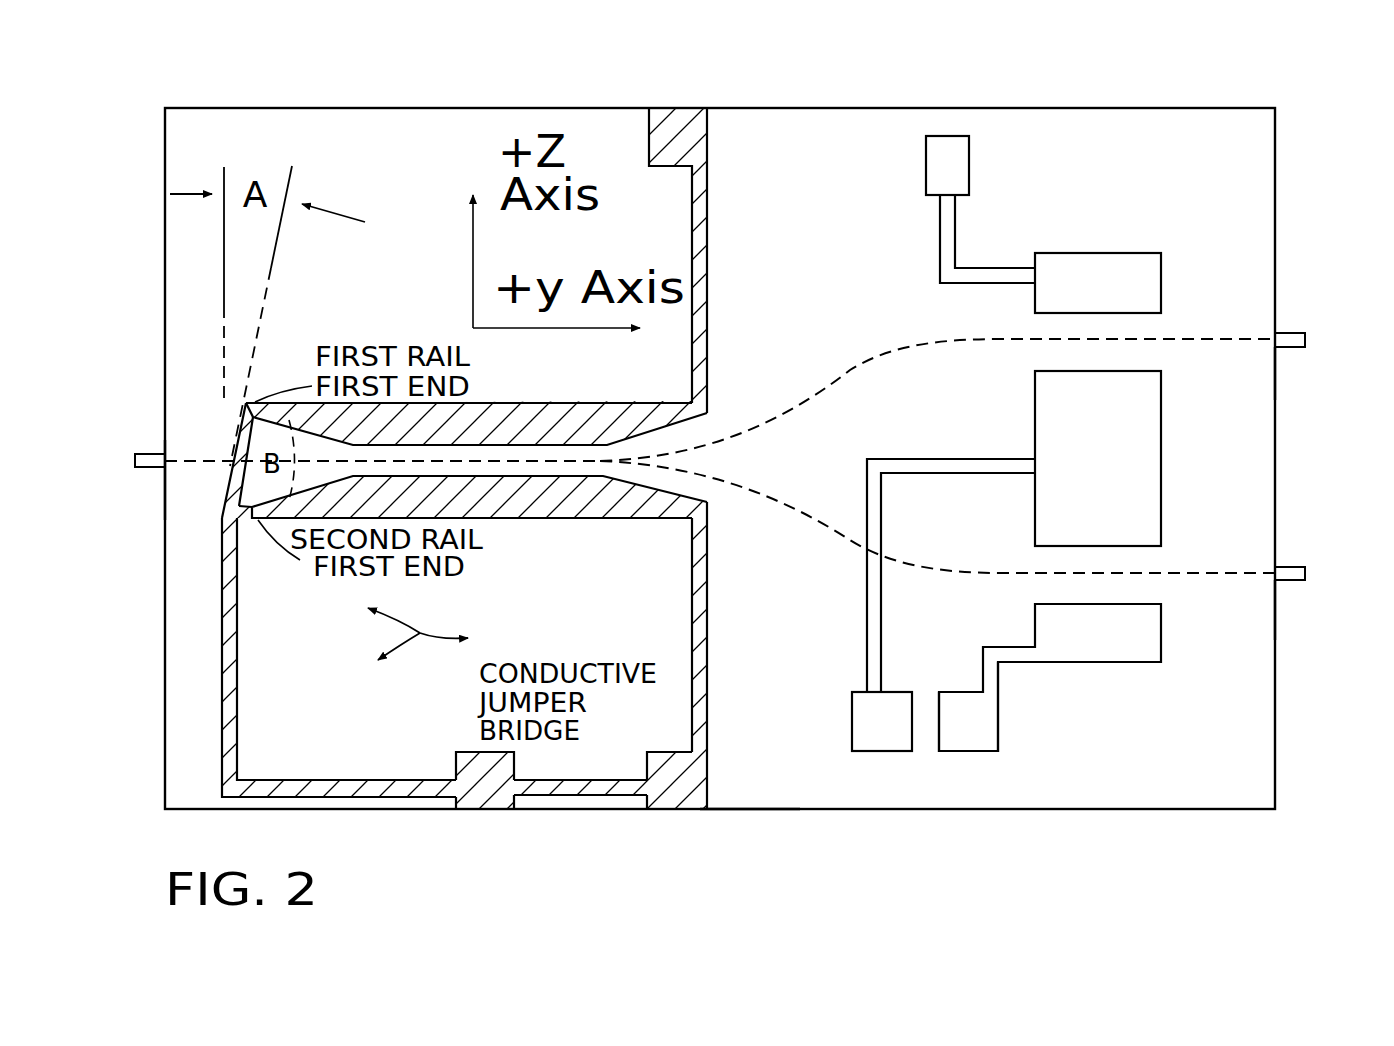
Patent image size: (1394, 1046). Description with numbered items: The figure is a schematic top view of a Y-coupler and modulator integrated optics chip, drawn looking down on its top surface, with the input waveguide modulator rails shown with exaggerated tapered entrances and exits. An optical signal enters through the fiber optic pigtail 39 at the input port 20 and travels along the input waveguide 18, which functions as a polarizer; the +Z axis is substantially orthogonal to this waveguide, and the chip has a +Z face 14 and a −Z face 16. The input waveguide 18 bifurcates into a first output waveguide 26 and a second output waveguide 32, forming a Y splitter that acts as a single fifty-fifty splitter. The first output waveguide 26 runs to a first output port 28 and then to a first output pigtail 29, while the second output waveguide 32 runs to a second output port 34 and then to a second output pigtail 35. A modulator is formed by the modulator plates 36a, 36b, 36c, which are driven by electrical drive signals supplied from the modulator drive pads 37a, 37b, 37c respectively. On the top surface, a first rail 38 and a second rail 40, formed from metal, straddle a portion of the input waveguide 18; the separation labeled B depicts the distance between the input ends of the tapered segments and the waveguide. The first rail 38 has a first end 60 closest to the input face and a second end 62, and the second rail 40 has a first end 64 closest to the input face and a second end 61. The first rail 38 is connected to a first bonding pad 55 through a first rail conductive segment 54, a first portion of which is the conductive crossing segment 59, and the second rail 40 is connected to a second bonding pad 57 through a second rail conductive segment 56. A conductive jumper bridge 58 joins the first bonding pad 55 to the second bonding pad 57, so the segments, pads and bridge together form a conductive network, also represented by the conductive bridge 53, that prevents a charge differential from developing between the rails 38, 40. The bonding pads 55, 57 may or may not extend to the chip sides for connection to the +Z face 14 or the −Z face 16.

The +Z face 14 is at (995, 105).
The −Z face 16 is at (749, 817).
The input waveguide 18 is at (198, 470).
The input port 20 is at (168, 463).
The first output waveguide 26 is at (1165, 333).
The first output port 28 is at (1278, 325).
The first output pigtail 29 is at (1297, 352).
The second output waveguide 32 is at (1152, 573).
The second output port 34 is at (1278, 560).
The second output pigtail 35 is at (1290, 585).
The modulator plate 36a is at (1050, 677).
The modulator plate 36b is at (1098, 458).
The modulator plate 36c is at (1098, 283).
The modulator drive pad 37a is at (998, 718).
The modulator drive pad 37b is at (845, 730).
The modulator drive pad 37c is at (926, 170).
The first rail 38 is at (535, 400).
The fiber optic pigtail 39 is at (150, 455).
The second rail 40 is at (580, 522).
The conductive bridge 53 is at (420, 633).
The first rail conductive segment 54 is at (240, 667).
The first bonding pad 55 is at (462, 750).
The second rail conductive segment 56 is at (707, 625).
The second bonding pad 57 is at (673, 752).
The conductive jumper bridge 58 is at (612, 778).
The conductive crossing segment 59 is at (228, 468).
The first rail first end 60 is at (250, 400).
The second rail second end 61 is at (680, 522).
The first rail second end 62 is at (686, 400).
The second rail first end 64 is at (255, 522).